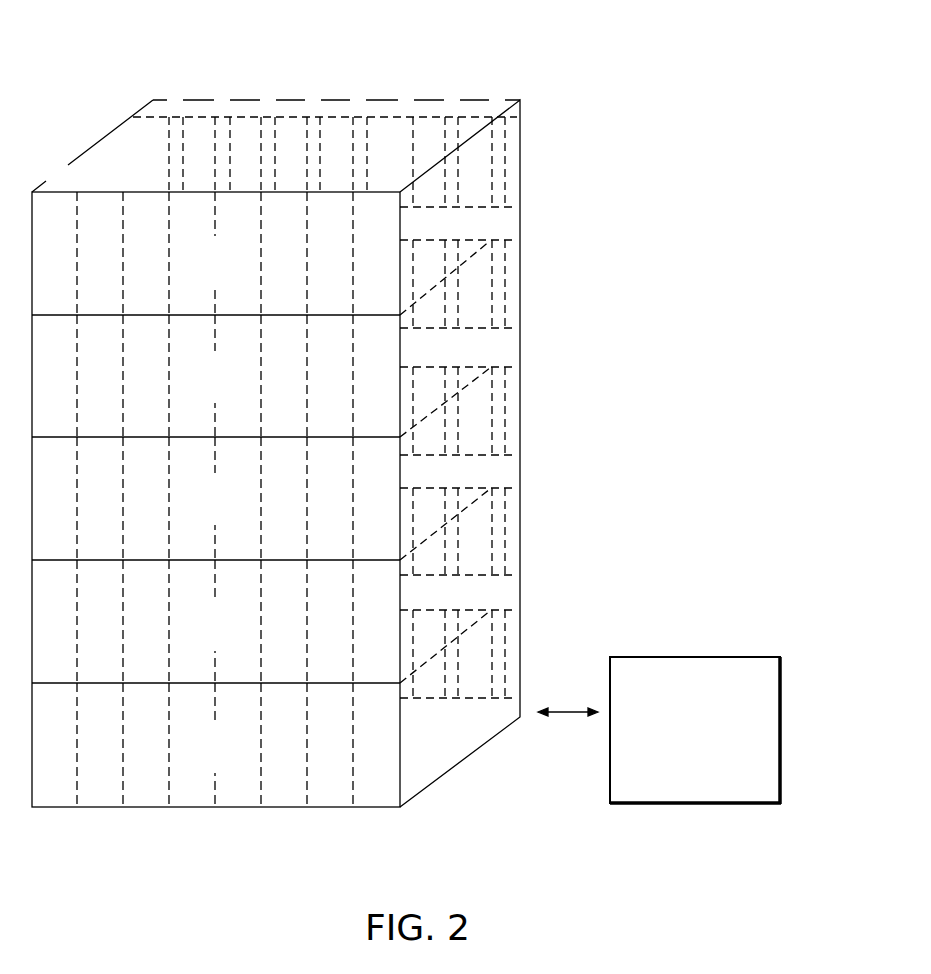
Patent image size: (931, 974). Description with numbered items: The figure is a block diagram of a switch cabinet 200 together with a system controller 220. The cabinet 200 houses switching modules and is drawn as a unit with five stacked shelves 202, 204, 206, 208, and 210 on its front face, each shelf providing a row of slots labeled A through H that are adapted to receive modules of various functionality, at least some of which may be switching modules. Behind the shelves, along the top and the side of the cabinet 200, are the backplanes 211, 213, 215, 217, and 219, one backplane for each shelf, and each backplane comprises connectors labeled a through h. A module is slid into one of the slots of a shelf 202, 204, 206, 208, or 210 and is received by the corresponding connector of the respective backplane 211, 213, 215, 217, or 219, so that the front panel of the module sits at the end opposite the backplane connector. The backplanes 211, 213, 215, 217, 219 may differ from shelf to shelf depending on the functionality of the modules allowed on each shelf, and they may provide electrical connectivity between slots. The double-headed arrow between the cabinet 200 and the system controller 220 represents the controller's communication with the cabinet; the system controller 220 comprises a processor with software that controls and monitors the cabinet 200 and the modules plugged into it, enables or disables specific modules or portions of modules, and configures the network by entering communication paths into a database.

The cabinet 200 is at (126, 52).
The backplane 211 is at (334, 110).
The shelf 202 is at (193, 283).
The shelf 204 is at (193, 398).
The shelf 206 is at (193, 520).
The shelf 208 is at (193, 646).
The shelf 210 is at (193, 768).
The backplane 213 is at (494, 236).
The backplane 215 is at (494, 361).
The backplane 217 is at (494, 484).
The backplane 219 is at (494, 606).
The system controller 220 is at (677, 768).